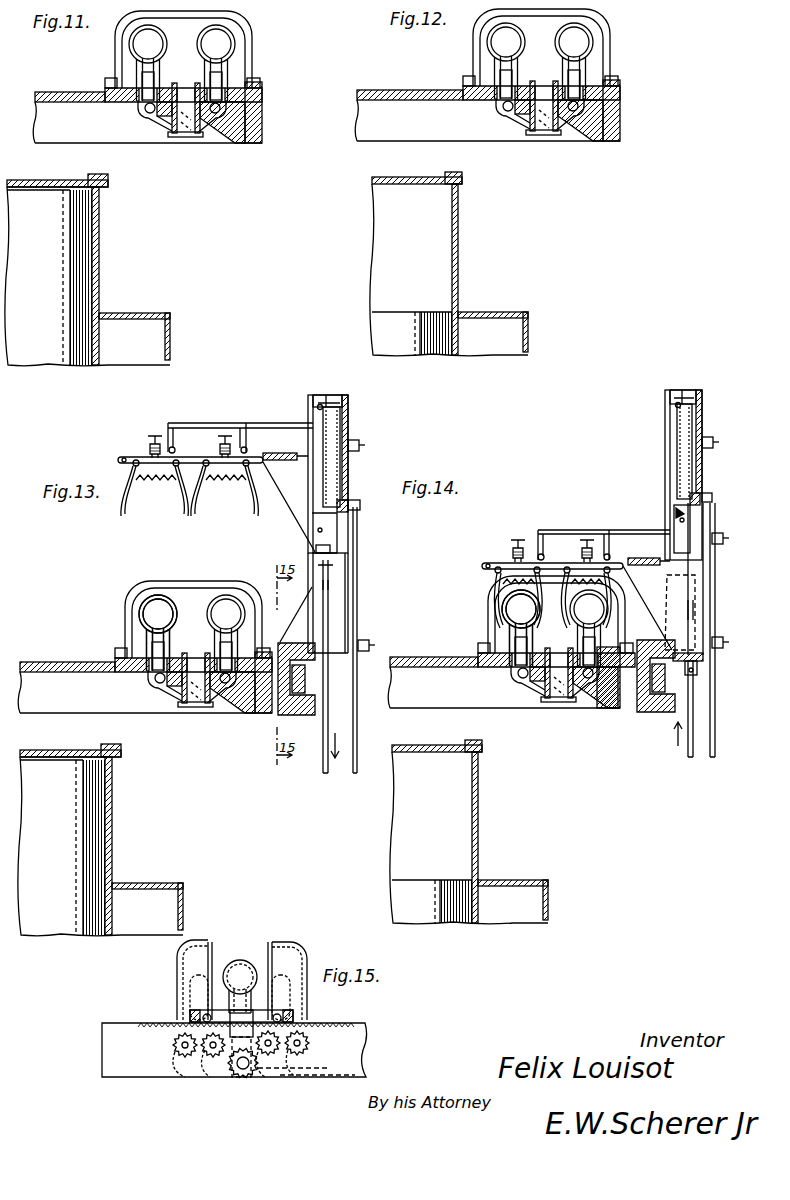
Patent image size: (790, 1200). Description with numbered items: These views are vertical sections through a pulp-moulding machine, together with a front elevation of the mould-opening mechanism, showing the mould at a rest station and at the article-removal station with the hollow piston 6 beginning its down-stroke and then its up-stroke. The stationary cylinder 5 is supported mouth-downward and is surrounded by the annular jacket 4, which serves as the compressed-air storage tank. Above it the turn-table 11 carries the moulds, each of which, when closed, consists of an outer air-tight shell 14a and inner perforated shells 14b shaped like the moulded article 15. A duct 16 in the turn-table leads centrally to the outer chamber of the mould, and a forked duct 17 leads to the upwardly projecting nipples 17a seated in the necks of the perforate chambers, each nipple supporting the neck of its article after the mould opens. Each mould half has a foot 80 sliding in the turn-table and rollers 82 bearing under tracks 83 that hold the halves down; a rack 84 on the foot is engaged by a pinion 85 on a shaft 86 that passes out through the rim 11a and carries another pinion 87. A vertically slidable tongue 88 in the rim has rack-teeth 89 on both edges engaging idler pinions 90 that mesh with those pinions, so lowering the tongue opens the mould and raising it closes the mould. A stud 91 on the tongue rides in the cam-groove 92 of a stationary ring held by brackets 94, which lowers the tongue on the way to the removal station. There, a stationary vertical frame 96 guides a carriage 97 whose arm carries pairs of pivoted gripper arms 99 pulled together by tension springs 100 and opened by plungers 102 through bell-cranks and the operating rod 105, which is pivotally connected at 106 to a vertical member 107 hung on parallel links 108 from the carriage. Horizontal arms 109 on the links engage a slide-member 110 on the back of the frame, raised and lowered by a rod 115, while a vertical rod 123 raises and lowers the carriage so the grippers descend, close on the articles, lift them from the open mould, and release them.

In FIG. 11, the annular jacket 4 is at (134, 336).
In FIG. 12, the annular jacket 4 is at (493, 332).
In FIG. 13, the annular jacket 4 is at (147, 906).
In FIG. 14, the annular jacket 4 is at (513, 900).
In FIG. 11, the stationary cylinder 5 is at (32, 180).
In FIG. 12, the stationary cylinder 5 is at (399, 177).
In FIG. 13, the stationary cylinder 5 is at (52, 750).
In FIG. 14, the stationary cylinder 5 is at (418, 746).
In FIG. 11, the hollow piston 6 is at (87, 276).
In FIG. 12, the hollow piston 6 is at (449, 270).
In FIG. 13, the hollow piston 6 is at (100, 846).
In FIG. 14, the hollow piston 6 is at (469, 838).
In FIG. 11, the turn-table 11 is at (50, 93).
In FIG. 12, the turn-table 11 is at (388, 91).
In FIG. 13, the turn-table 11 is at (62, 662).
In FIG. 14, the turn-table 11 is at (511, 675).
In FIG. 15, the turn-table 11 is at (127, 1037).
In FIG. 15, the rim of the turn-table 11a is at (127, 1063).
In FIG. 11, the outer air-tight shell 14a is at (252, 30).
In FIG. 12, the outer air-tight shell 14a is at (610, 30).
In FIG. 13, the outer air-tight shell 14a is at (193, 578).
In FIG. 14, the outer air-tight shell 14a is at (622, 628).
In FIG. 15, the outer air-tight shell 14a is at (177, 961).
In FIG. 11, the inner hollow shell 14b is at (188, 38).
In FIG. 12, the inner hollow shell 14b is at (548, 34).
In FIG. 13, the inner hollow shell 14b is at (206, 604).
In FIG. 14, the inner hollow shell 14b is at (555, 628).
In FIG. 15, the inner hollow shell 14b is at (270, 943).
In FIG. 13, the moulded article 15 is at (187, 633).
In FIG. 14, the moulded article 15 is at (550, 628).
In FIG. 15, the moulded article 15 is at (240, 986).
In FIG. 11, the duct 16 is at (185, 110).
In FIG. 12, the duct 16 is at (543, 108).
In FIG. 13, the duct 16 is at (195, 680).
In FIG. 14, the duct 16 is at (558, 675).
In FIG. 11, the forked duct 17 is at (163, 117).
In FIG. 12, the forked duct 17 is at (525, 117).
In FIG. 13, the forked duct 17 is at (172, 692).
In FIG. 14, the forked duct 17 is at (535, 690).
In FIG. 11, the nipple 17a is at (216, 72).
In FIG. 12, the nipple 17a is at (577, 72).
In FIG. 13, the nipple 17a is at (226, 645).
In FIG. 14, the nipple 17a is at (584, 648).
In FIG. 15, the nipple 17a is at (262, 988).
In FIG. 15, the foot 80 is at (160, 1023).
In FIG. 15, the roller 82 is at (209, 1015).
In FIG. 15, the track 83 is at (205, 1010).
In FIG. 15, the rack 84 is at (168, 1037).
In FIG. 15, the pinion 85 is at (182, 1058).
In FIG. 15, the shaft 86 is at (198, 1052).
In FIG. 15, the pinion 87 is at (177, 1053).
In FIG. 15, the tongue 88 is at (252, 1066).
In FIG. 15, the rack-teeth 89 is at (240, 1070).
In FIG. 15, the idler pinion 90 is at (212, 1060).
In FIG. 15, the roller or stud 91 is at (237, 1068).
In FIG. 13, the cam-groove 92 is at (278, 683).
In FIG. 14, the cam-groove 92 is at (656, 676).
In FIG. 13, the bracket 94 is at (285, 713).
In FIG. 14, the bracket 94 is at (658, 678).
In FIG. 13, the stationary vertical frame 96 is at (310, 553).
In FIG. 14, the stationary vertical frame 96 is at (669, 541).
In FIG. 13, the carriage 97 is at (318, 543).
In FIG. 14, the carriage 97 is at (689, 612).
In FIG. 13, the gripper arm 99 is at (119, 528).
In FIG. 14, the gripper arm 99 is at (502, 610).
In FIG. 14, the tension spring 100 is at (500, 586).
In FIG. 13, the plunger 102 is at (152, 448).
In FIG. 14, the plunger 102 is at (515, 556).
In FIG. 13, the operating rod 105 is at (270, 423).
In FIG. 13, the pivotal connection 106 is at (248, 422).
In FIG. 14, the pivotal connection 106 is at (618, 530).
In FIG. 13, the vertical member 107 is at (313, 470).
In FIG. 14, the vertical member 107 is at (668, 470).
In FIG. 13, the parallel link 108 is at (316, 400).
In FIG. 14, the parallel link 108 is at (677, 402).
In FIG. 13, the horizontal arm 109 is at (332, 398).
In FIG. 14, the horizontal arm 109 is at (685, 390).
In FIG. 13, the slide-member 110 is at (342, 476).
In FIG. 14, the slide-member 110 is at (693, 478).
In FIG. 13, the rod 115 is at (354, 725).
In FIG. 14, the rod 115 is at (716, 678).
In FIG. 13, the vertical rod 123 is at (330, 702).
In FIG. 14, the vertical rod 123 is at (693, 705).